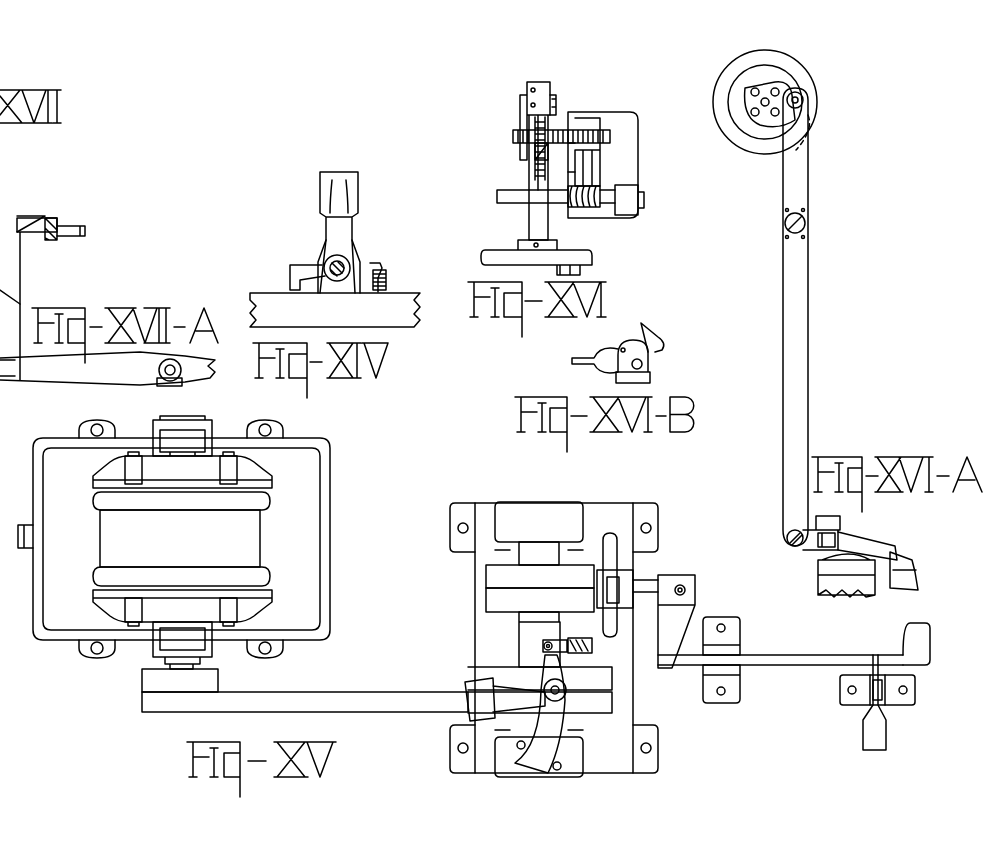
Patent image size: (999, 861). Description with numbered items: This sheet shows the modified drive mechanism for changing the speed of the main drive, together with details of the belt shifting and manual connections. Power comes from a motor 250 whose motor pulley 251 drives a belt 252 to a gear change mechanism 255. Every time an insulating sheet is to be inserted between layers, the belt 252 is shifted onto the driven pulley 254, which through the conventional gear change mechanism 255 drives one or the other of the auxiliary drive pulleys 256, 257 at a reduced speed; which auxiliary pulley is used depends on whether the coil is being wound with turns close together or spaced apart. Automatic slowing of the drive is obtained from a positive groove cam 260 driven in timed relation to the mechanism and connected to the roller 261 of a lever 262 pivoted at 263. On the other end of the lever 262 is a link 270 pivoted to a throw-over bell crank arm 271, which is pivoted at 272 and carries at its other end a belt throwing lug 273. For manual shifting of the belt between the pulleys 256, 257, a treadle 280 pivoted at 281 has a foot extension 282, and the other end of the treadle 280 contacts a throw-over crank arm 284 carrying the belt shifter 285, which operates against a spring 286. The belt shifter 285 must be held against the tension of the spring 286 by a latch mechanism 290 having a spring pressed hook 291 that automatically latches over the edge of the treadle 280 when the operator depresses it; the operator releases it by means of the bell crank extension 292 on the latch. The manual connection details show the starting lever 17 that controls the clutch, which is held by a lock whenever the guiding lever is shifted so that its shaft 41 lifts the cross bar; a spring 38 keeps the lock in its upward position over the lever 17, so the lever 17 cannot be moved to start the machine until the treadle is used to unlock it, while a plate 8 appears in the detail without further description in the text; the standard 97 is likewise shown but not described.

In FIG. 17A, the plate 8 is at (19, 222).
In FIG. 17A, the starting lever 17 is at (30, 223).
In FIG. 17A, the spring 38 is at (42, 233).
In FIG. 17A, the shaft 41 is at (75, 229).
In FIG. 16, the standard 97 is at (545, 222).
In FIG. 15, the motor 250 is at (249, 528).
In FIG. 15, the motor pulley 251 is at (148, 676).
In FIG. 15, the belt 252 is at (362, 696).
In FIG. 15, the driven pulley 254 is at (486, 678).
In FIG. 15, the gear change mechanism 255 is at (553, 516).
In FIG. 15, the auxiliary drive pulley 256 is at (496, 601).
In FIG. 15, the auxiliary drive pulley 257 is at (496, 579).
In FIG. 16A, the positive groove cam 260 is at (730, 76).
In FIG. 16A, the roller 261 is at (804, 101).
In FIG. 16A, the lever 262 is at (801, 300).
In FIG. 16A, the pivot 263 is at (806, 223).
In FIG. 16A, the link 270 is at (805, 546).
In FIG. 15, the link 270 is at (590, 648).
In FIG. 15, the throw-over bell crank arm 271 is at (552, 672).
In FIG. 15, the pivot 272 is at (561, 697).
In FIG. 16A, the belt throwing lug 273 is at (910, 577).
In FIG. 15, the belt throwing lug 273 is at (470, 705).
In FIG. 17A, the treadle 280 is at (70, 374).
In FIG. 15, the treadle 280 is at (787, 658).
In FIG. 15, the pivot 281 is at (720, 661).
In FIG. 15, the foot extension 282 is at (920, 636).
In FIG. 15, the throw-over crank arm 284 is at (673, 642).
In FIG. 15, the belt shifter 285 is at (626, 585).
In FIG. 14, the spring 286 is at (386, 270).
In FIG. 15, the latch mechanism 290 is at (882, 716).
In FIG. 16B, the spring pressed hook 291 is at (660, 341).
In FIG. 16B, the bell crank extension 292 is at (597, 360).